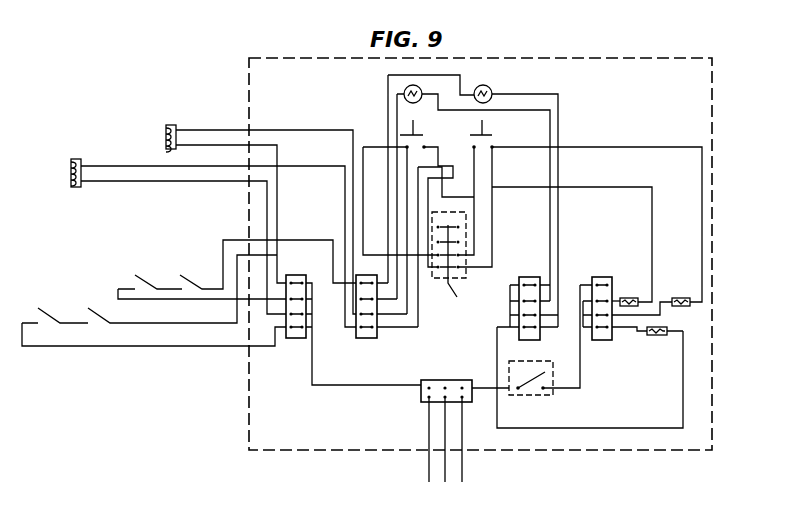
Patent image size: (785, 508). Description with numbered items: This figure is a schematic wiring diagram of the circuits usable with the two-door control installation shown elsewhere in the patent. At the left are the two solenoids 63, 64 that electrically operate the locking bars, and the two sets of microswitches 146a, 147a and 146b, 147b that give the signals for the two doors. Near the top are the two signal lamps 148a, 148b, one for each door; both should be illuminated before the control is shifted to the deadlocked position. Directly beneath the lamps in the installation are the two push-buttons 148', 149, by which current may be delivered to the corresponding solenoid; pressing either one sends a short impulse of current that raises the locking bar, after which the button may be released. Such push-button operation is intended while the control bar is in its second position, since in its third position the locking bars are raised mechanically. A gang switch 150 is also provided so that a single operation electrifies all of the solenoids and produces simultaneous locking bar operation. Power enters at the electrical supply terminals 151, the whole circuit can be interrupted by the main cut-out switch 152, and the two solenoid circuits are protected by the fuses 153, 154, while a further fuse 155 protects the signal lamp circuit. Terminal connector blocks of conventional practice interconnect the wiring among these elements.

The solenoid 63 is at (166, 137).
The solenoid 64 is at (71, 176).
The microswitch 146a is at (93, 305).
The microswitch 146b is at (199, 264).
The microswitch 147a is at (52, 296).
The microswitch 147b is at (143, 273).
The signal lamp 148a is at (403, 90).
The signal lamp 148b is at (493, 90).
The push-button 148' is at (420, 221).
The push-button 149 is at (495, 145).
The gang switch 150 is at (465, 283).
The electrical supply terminals 151 is at (418, 405).
The main cut-out switch 152 is at (543, 398).
The fuse 153 is at (625, 297).
The fuse 154 is at (677, 297).
The fuse 155 is at (652, 337).